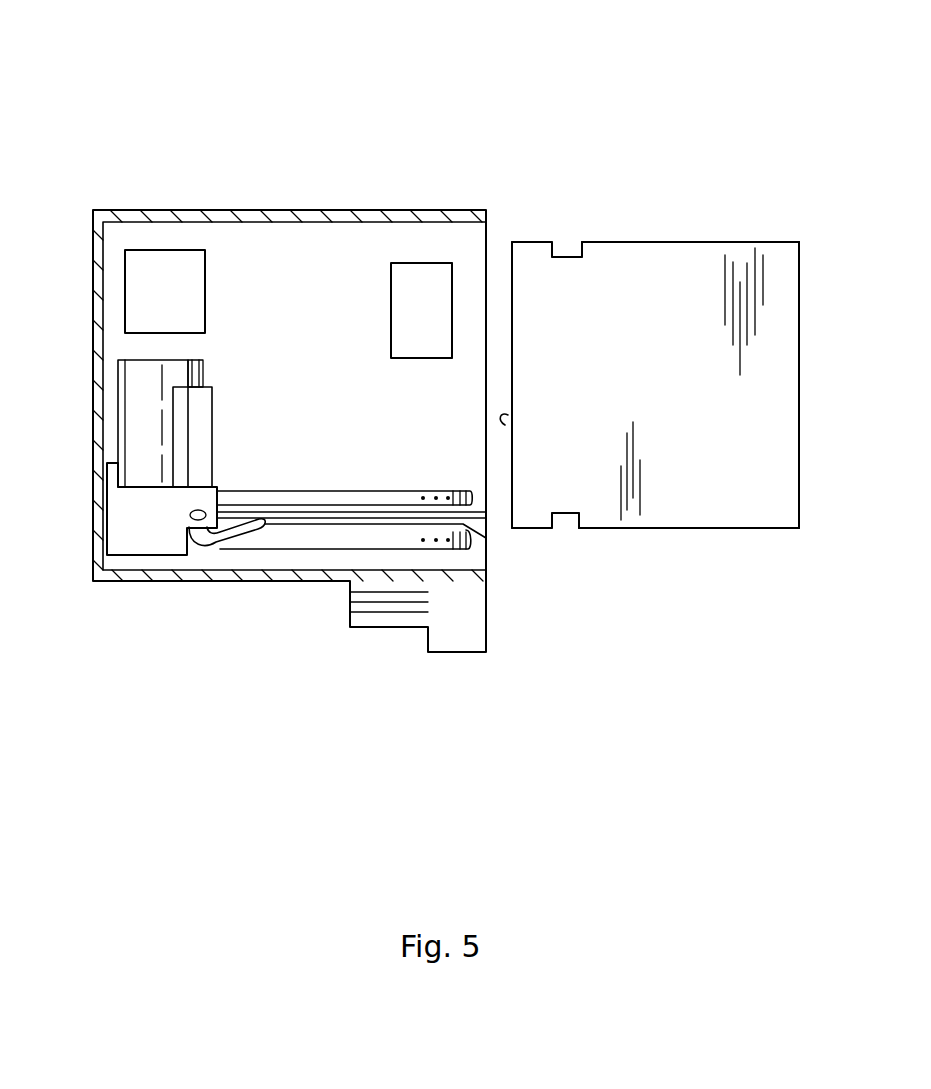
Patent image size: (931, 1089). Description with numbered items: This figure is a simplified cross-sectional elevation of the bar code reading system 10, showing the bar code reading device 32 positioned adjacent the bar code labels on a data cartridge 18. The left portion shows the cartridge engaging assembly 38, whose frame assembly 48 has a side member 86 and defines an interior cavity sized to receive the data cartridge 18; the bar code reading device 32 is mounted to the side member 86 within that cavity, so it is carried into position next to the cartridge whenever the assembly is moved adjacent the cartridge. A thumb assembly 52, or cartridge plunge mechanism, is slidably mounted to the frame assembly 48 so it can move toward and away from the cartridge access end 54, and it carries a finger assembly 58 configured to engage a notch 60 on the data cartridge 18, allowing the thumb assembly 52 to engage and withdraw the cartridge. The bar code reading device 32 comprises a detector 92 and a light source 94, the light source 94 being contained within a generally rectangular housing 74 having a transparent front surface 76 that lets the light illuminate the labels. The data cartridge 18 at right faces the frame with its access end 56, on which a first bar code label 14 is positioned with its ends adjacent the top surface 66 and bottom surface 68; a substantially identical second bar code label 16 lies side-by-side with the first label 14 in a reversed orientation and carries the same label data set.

The bar code reading system 10 is at (170, 74).
The first bar code label 14 is at (505, 258).
The second bar code label 16 is at (512, 500).
The data cartridge 18 is at (804, 263).
The bar code reading device 32 is at (332, 286).
The cartridge engaging assembly 38 is at (93, 212).
The frame assembly 48 is at (93, 261).
The thumb assembly 52 is at (118, 416).
The cartridge access end 54 is at (490, 230).
The access end 56 is at (505, 425).
The finger assembly 58 is at (218, 540).
The notch 60 is at (567, 255).
The top surface 66 is at (660, 242).
The bottom surface 68 is at (748, 528).
The housing 74 is at (391, 265).
The transparent front surface 76 is at (464, 240).
The side member 86 is at (335, 429).
The detector 92 is at (178, 250).
The light source 94 is at (408, 358).